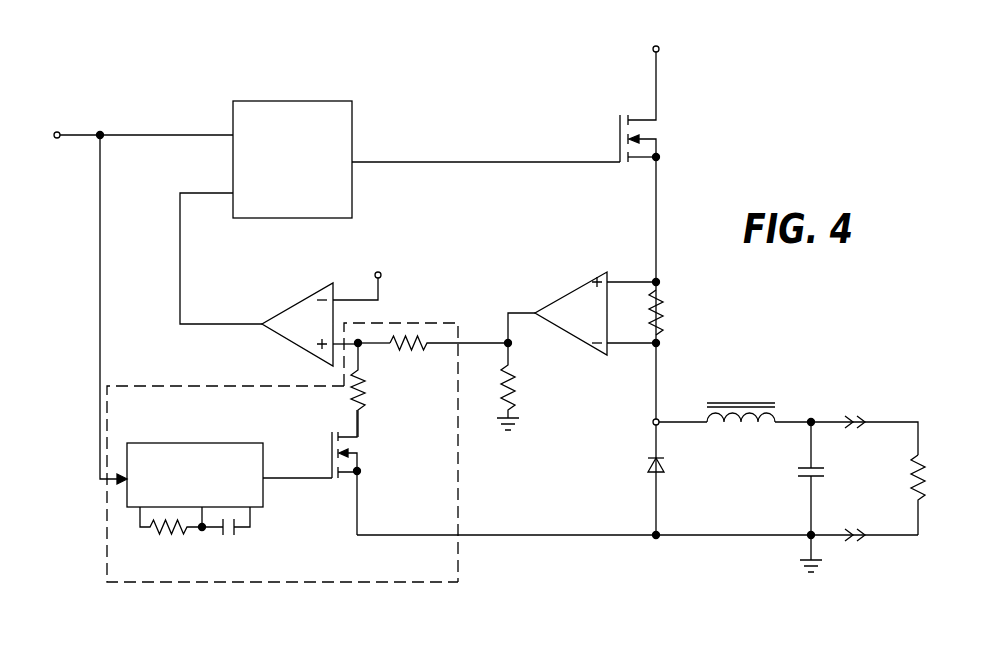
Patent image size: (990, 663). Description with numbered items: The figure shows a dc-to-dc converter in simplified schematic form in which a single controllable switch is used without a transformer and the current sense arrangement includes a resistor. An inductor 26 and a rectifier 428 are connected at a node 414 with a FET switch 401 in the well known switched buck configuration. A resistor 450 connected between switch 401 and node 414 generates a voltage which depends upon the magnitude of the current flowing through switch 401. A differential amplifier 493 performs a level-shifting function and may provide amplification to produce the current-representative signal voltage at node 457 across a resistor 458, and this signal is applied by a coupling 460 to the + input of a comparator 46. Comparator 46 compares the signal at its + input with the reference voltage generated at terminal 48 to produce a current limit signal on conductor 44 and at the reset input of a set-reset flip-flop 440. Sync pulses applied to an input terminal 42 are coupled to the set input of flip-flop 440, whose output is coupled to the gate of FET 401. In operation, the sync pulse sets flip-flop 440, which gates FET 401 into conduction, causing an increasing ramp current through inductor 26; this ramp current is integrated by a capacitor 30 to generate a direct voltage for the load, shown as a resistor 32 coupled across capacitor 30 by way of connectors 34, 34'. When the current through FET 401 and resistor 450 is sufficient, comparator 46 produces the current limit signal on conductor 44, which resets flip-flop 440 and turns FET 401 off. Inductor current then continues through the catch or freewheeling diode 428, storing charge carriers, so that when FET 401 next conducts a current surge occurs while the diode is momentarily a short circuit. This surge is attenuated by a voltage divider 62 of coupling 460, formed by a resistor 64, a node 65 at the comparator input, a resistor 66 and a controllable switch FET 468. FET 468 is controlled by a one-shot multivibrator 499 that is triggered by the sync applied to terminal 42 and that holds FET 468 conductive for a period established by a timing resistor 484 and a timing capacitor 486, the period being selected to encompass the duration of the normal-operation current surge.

The input terminal 42 is at (57, 139).
The conductor 44 is at (180, 258).
The comparator 46 is at (283, 337).
The terminal 48 is at (375, 276).
The resistor 64 is at (417, 348).
The node 65 is at (361, 341).
The resistor 66 is at (352, 399).
The voltage divider 62 is at (418, 429).
The set-reset flip-flop 440 is at (313, 101).
The FET switch 401 is at (626, 164).
The resistor 450 is at (664, 310).
The differential amplifier 493 is at (568, 295).
The node 457 is at (506, 340).
The resistor 458 is at (514, 391).
The node 414 is at (652, 422).
The rectifier 428 is at (668, 468).
The inductor 26 is at (771, 425).
The capacitor 30 is at (826, 470).
The resistor 32 is at (925, 478).
The connector 34 is at (863, 402).
The connector 34' is at (873, 553).
The controllable switch FET 468 is at (330, 450).
The one-shot multivibrator 499 is at (187, 443).
The timing resistor 484 is at (168, 532).
The timing capacitor 486 is at (237, 534).
The coupling 460 is at (282, 484).